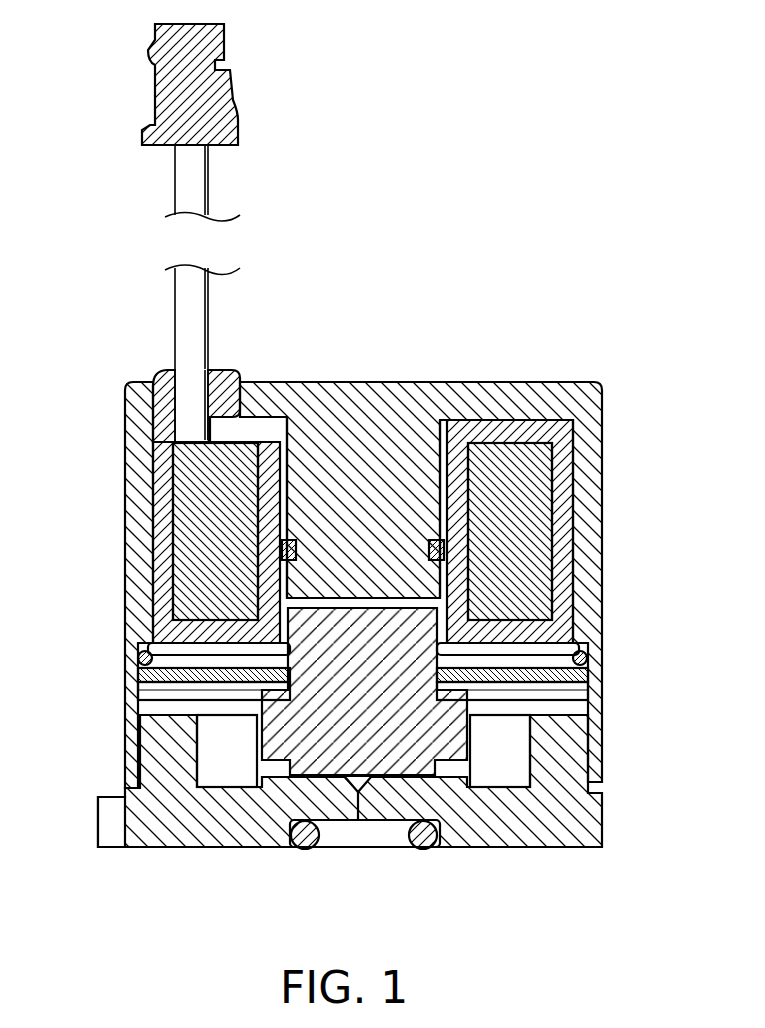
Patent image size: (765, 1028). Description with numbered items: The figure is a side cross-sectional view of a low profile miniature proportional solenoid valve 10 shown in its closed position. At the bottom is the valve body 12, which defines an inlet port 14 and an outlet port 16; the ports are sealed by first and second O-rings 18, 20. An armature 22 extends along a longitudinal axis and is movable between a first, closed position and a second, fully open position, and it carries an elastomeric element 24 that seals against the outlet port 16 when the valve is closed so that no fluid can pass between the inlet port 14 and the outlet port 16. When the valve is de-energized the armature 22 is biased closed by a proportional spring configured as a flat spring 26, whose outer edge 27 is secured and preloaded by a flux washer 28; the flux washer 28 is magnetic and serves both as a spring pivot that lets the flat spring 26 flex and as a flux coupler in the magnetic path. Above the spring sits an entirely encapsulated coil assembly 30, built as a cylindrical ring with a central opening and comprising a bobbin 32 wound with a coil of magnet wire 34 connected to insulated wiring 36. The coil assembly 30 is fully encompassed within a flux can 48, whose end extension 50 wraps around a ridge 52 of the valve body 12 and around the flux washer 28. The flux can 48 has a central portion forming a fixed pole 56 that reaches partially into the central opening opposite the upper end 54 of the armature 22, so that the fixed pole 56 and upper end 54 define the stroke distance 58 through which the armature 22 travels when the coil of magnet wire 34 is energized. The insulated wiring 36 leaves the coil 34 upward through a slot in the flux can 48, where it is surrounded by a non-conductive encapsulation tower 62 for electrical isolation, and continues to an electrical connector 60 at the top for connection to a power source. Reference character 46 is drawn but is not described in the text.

The proportional solenoid valve 10 is at (627, 308).
The valve body 12 is at (155, 825).
The inlet port 14 is at (220, 765).
The outlet port 16 is at (377, 810).
The first O-ring 18 is at (273, 848).
The second O-ring 20 is at (420, 838).
The armature 22 is at (280, 733).
The elastomeric element 24 is at (343, 768).
The flat spring 26 is at (178, 698).
The outer edge 27 is at (562, 690).
The flux washer 28 is at (560, 668).
The encapsulated coil assembly 30 is at (580, 473).
The bobbin 32 is at (508, 440).
The coil of magnet wire 34 is at (248, 462).
The insulated wiring 36 is at (188, 318).
The flux sleeve 46 is at (163, 475).
The flux can 48 is at (125, 553).
The end extension 50 is at (560, 753).
The ridge 52 is at (603, 745).
The upper end 54 is at (400, 630).
The fixed pole 56 is at (373, 568).
The stroke distance 58 is at (410, 605).
The electrical connector 60 is at (150, 130).
The encapsulation tower 62 is at (187, 403).